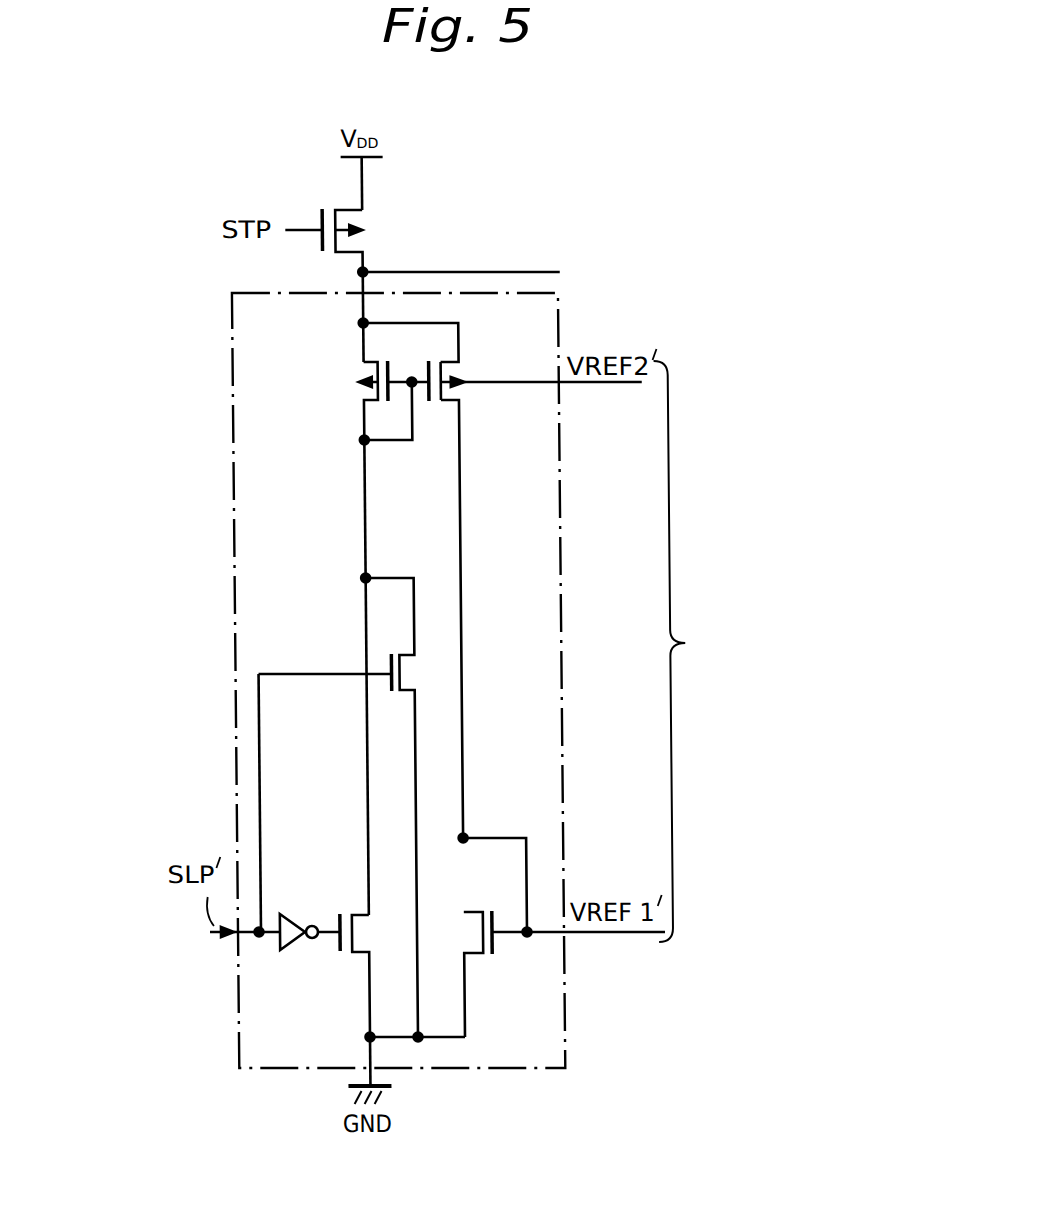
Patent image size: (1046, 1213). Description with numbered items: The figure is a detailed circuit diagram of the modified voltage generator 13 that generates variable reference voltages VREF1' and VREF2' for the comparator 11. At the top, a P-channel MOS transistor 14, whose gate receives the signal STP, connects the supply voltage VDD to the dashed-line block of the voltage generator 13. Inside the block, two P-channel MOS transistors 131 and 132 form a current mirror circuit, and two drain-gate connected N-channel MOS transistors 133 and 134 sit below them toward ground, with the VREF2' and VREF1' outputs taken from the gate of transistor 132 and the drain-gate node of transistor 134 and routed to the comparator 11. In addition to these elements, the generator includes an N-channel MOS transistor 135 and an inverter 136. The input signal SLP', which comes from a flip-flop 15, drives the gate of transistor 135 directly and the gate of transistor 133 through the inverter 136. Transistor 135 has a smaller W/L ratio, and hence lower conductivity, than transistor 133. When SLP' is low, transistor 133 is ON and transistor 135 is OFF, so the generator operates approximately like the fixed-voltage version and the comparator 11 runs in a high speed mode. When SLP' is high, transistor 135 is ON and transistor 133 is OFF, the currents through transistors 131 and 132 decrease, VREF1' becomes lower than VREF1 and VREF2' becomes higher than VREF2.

The P-channel MOS transistor 14 is at (351, 221).
The voltage generator 13 is at (465, 292).
The P-channel MOS transistor 131 is at (373, 386).
The P-channel MOS transistor 132 is at (447, 399).
The N-channel MOS transistor 133 is at (354, 945).
The N-channel MOS transistor 134 is at (467, 950).
The N-channel MOS transistor 135 is at (401, 688).
The inverter 136 is at (287, 910).
The flip-flop 15 is at (143, 932).
The comparator 11 is at (763, 651).